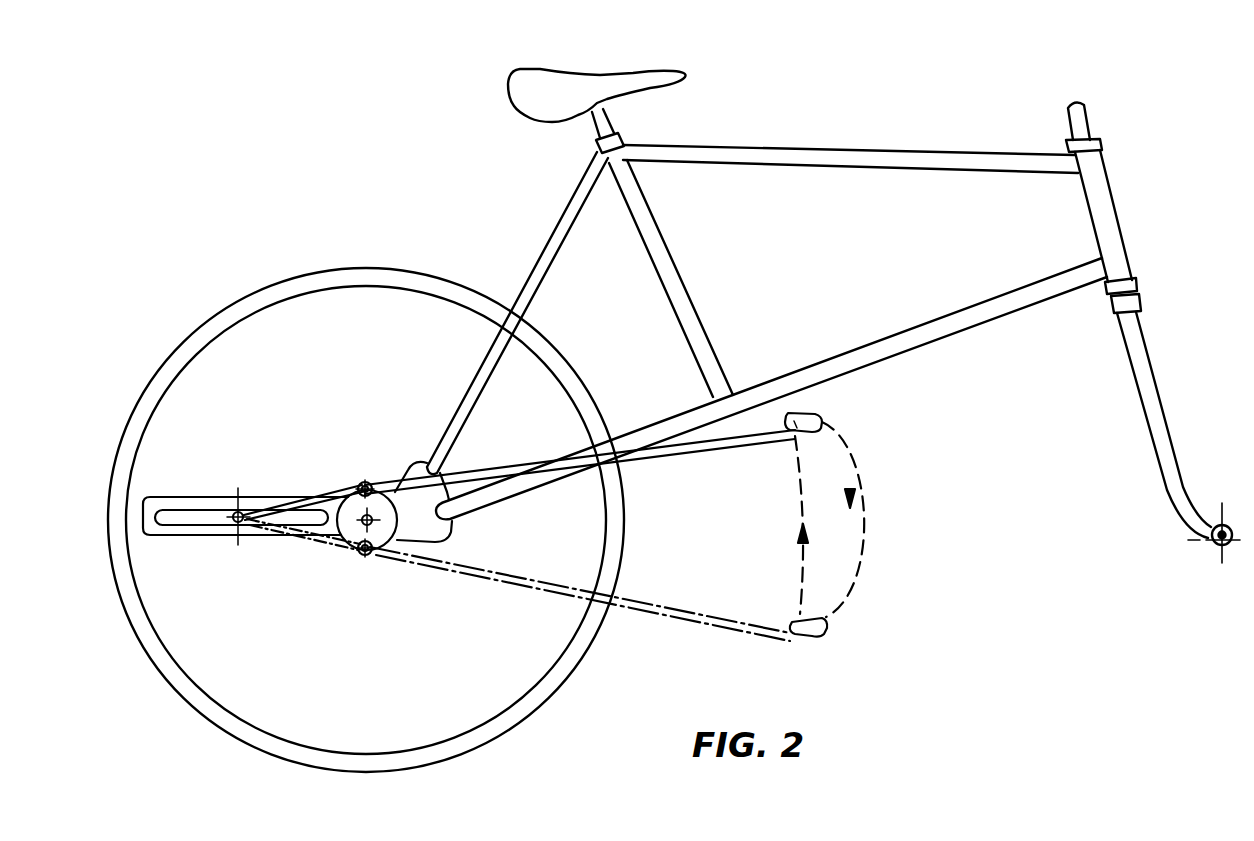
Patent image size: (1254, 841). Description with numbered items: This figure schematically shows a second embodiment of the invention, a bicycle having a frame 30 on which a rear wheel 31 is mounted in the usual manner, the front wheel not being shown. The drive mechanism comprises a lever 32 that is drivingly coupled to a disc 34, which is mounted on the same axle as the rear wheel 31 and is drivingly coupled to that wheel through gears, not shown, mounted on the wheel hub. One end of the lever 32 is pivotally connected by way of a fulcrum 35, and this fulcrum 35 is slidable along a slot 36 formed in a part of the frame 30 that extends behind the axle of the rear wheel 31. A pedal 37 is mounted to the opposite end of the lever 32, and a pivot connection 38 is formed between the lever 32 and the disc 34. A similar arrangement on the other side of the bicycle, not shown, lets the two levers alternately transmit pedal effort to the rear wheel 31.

The frame 30 is at (855, 156).
The rear wheel 31 is at (372, 273).
The lever 32 is at (699, 448).
The disc 34 is at (400, 530).
The fulcrum 35 is at (237, 512).
The slot 36 is at (192, 518).
The pedal 37 is at (820, 417).
The pivot connection 38 is at (365, 484).